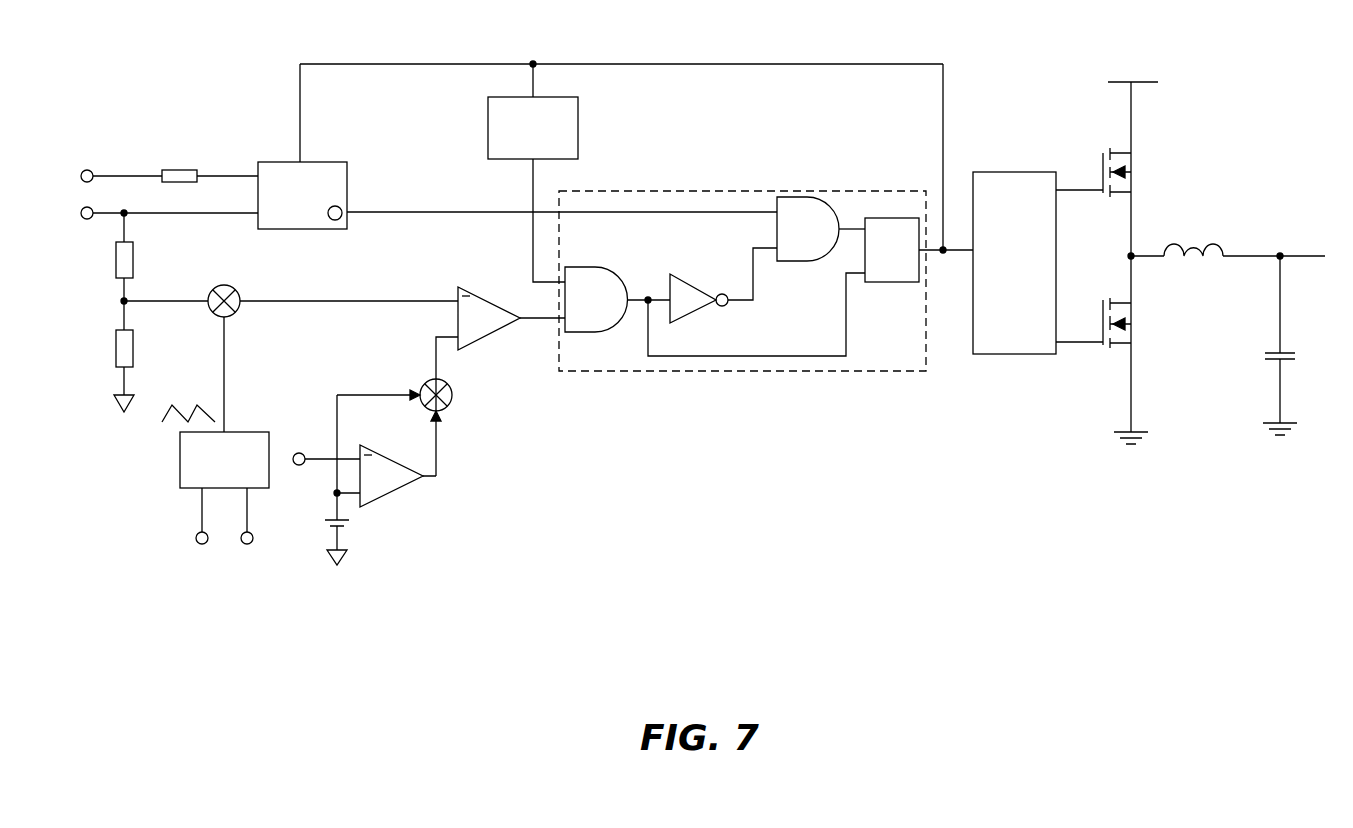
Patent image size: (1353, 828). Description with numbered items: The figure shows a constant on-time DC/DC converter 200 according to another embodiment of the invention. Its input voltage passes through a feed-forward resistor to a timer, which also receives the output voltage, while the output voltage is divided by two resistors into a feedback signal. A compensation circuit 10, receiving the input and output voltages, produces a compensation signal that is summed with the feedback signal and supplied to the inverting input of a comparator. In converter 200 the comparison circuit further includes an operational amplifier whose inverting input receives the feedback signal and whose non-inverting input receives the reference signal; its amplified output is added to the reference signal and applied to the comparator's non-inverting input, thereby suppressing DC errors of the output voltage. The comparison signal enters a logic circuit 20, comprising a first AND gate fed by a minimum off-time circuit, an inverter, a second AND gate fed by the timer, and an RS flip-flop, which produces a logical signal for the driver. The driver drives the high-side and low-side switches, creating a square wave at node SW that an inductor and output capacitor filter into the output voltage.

The constant on-time DC/DC converter 200 is at (115, 72).
The logic circuit 20 is at (814, 188).
The compensation circuit 10 is at (180, 479).